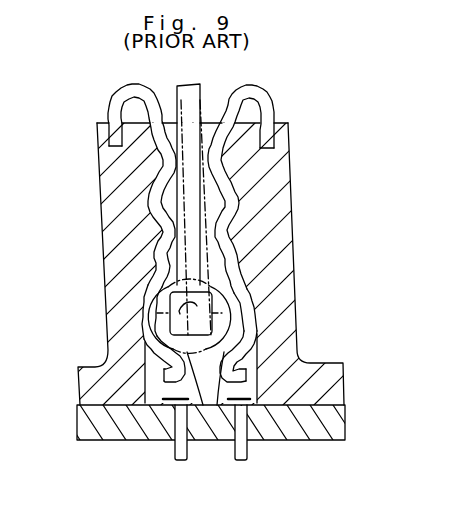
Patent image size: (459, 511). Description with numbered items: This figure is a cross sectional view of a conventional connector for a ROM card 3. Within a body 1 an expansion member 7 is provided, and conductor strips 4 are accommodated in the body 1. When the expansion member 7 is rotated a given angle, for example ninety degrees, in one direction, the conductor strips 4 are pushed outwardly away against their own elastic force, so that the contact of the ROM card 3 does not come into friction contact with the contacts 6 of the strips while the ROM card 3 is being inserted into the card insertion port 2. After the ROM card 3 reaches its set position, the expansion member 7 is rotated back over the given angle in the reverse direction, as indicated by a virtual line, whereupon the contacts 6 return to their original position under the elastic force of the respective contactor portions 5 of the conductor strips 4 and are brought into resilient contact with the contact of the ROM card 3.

The body 1 is at (223, 316).
The card insertion port 2 is at (177, 118).
The ROM card 3 is at (203, 97).
The conductor strips 4 is at (150, 210).
The contactor portions 5 is at (144, 322).
The contacts 6 is at (196, 445).
The expansion member 7 is at (215, 360).